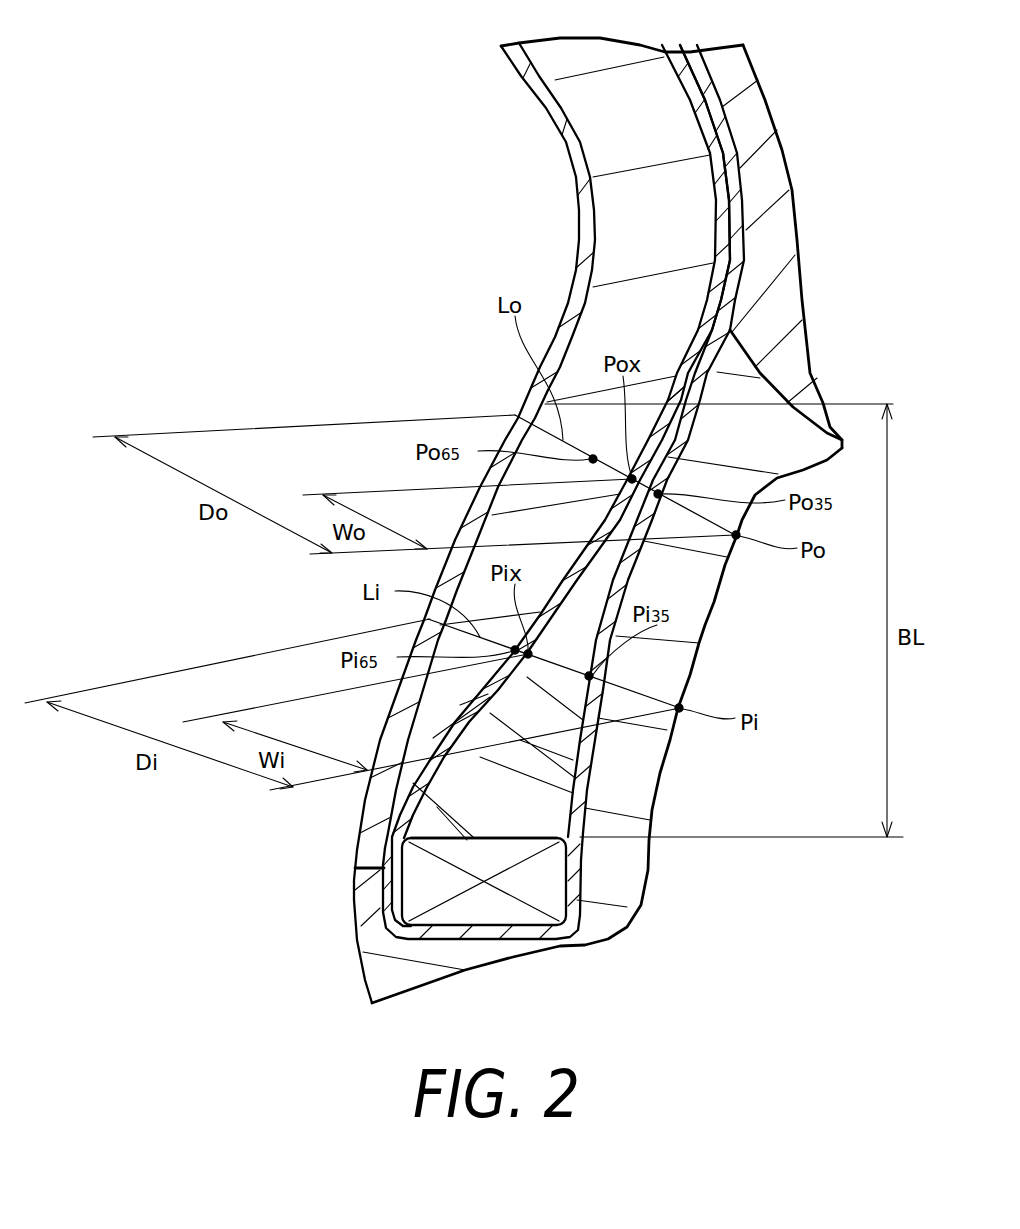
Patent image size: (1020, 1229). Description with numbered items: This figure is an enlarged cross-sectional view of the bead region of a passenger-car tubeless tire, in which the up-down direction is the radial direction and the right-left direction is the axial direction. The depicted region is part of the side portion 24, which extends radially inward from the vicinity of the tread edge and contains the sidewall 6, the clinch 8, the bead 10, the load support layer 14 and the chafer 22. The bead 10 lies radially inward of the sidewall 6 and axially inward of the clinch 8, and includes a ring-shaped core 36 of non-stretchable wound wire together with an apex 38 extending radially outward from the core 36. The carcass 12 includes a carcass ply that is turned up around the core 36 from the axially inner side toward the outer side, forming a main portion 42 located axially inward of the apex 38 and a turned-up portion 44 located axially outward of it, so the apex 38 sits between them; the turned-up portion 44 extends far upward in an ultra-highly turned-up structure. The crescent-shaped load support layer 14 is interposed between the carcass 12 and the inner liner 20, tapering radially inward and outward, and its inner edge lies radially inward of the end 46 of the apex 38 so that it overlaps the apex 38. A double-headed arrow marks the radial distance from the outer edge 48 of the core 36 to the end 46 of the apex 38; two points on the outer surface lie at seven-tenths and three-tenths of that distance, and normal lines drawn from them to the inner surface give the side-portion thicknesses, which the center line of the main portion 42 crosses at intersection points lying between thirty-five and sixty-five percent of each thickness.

The sidewall 6 is at (770, 165).
The clinch 8 is at (630, 882).
The bead 10 is at (238, 808).
The carcass 12 is at (692, 90).
The load support layer 14 is at (603, 147).
The inner liner 20 is at (553, 100).
The chafer 22 is at (382, 973).
The side portion 24 is at (482, 57).
The core 36 is at (413, 890).
The apex 38 is at (427, 820).
The main portion 42 is at (488, 694).
The turned-up portion 44 is at (585, 782).
The end of the apex 46 is at (670, 398).
The outer edge of the core 48 is at (487, 838).